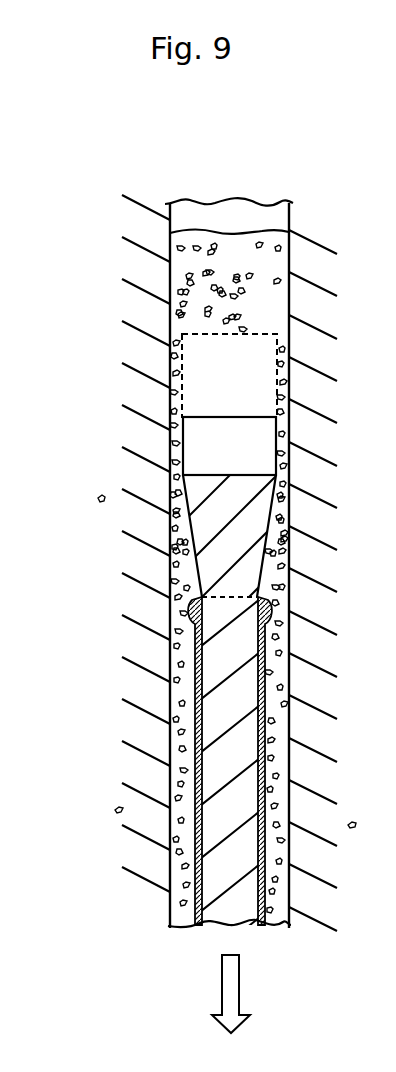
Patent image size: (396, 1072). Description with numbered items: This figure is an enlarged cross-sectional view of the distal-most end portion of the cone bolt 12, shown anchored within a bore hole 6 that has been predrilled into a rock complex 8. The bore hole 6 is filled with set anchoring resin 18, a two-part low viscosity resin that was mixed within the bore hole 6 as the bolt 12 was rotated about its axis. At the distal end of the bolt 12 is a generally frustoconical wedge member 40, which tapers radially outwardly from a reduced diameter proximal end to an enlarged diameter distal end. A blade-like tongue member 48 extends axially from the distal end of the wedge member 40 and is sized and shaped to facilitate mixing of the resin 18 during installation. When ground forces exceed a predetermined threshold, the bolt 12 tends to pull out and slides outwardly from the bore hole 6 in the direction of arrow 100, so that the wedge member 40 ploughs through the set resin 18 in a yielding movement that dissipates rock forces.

The bore hole 6 is at (173, 800).
The rock complex 8 is at (330, 490).
The cone bolt 12 is at (231, 810).
The resin 18 is at (183, 728).
The wedge member 40 is at (192, 517).
The tongue member 48 is at (197, 443).
The arrow 100 is at (230, 981).